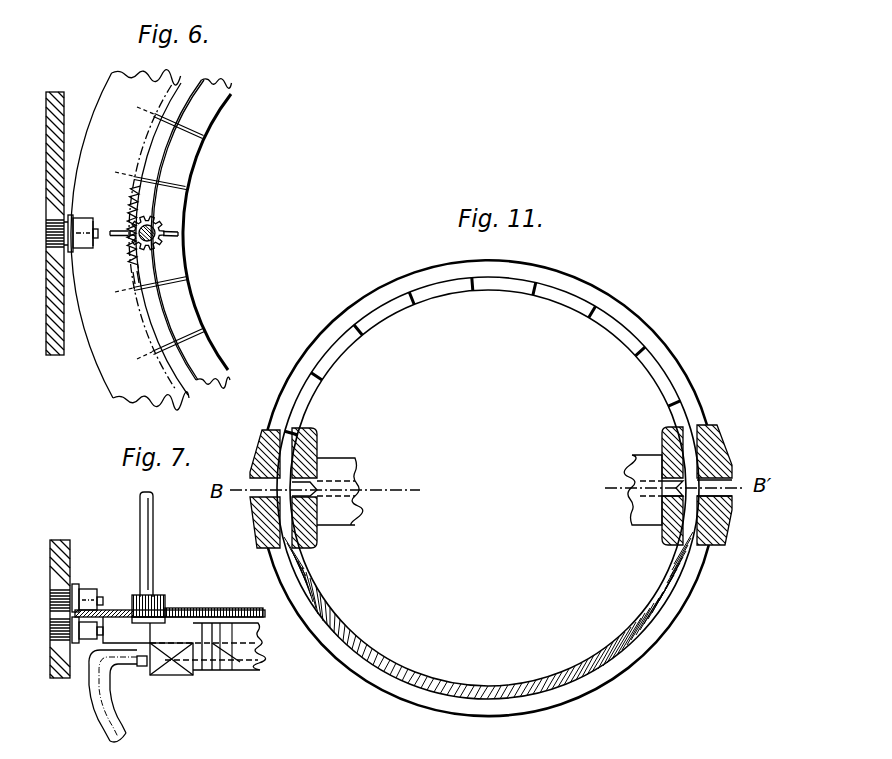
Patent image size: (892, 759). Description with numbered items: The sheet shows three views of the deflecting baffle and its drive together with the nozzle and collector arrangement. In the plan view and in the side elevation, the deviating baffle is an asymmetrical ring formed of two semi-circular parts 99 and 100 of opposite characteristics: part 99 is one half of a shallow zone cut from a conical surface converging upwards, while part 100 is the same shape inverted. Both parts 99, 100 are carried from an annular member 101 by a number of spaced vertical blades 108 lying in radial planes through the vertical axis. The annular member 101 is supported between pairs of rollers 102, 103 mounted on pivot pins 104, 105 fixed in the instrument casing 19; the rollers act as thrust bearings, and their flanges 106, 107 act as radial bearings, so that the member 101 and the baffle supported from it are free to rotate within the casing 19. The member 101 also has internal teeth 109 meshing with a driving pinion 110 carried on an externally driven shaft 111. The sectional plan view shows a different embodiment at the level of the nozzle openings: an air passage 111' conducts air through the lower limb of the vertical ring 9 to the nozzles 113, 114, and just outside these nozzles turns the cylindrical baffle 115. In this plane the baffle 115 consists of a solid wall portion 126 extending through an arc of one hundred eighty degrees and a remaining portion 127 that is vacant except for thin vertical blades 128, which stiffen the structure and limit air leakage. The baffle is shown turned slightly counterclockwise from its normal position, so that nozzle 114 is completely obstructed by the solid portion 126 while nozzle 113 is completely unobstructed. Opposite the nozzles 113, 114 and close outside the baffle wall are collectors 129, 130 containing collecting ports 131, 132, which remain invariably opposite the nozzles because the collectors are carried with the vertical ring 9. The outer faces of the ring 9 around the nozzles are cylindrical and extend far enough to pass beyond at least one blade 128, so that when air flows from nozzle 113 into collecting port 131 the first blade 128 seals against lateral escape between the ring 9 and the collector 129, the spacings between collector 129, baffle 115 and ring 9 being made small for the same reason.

In FIG. 6, the instrument casing 19 is at (55, 330).
In FIG. 6, the semi-circular part 99 is at (203, 337).
In FIG. 7, the semi-circular part 99 is at (175, 668).
In FIG. 6, the semi-circular part 100 is at (180, 166).
In FIG. 7, the semi-circular part 100 is at (213, 660).
In FIG. 6, the annular member 101 is at (140, 323).
In FIG. 7, the annular member 101 is at (113, 610).
In FIG. 6, the roller 102 is at (96, 213).
In FIG. 7, the roller 102 is at (87, 590).
In FIG. 7, the roller 103 is at (85, 642).
In FIG. 6, the pivot pin 104 is at (96, 250).
In FIG. 7, the pivot pin 104 is at (56, 540).
In FIG. 7, the pivot pin 105 is at (78, 629).
In FIG. 6, the flange 106 is at (74, 216).
In FIG. 7, the flange 106 is at (77, 584).
In FIG. 7, the flange 107 is at (58, 678).
In FIG. 6, the vertical blade 108 is at (183, 125).
In FIG. 7, the vertical blade 108 is at (227, 633).
In FIG. 6, the internal teeth 109 is at (128, 215).
In FIG. 7, the internal teeth 109 is at (207, 610).
In FIG. 6, the driving pinion 110 is at (158, 216).
In FIG. 7, the driving pinion 110 is at (153, 597).
In FIG. 6, the shaft 111 is at (181, 239).
In FIG. 7, the shaft 111 is at (168, 538).
In FIG. 11, the air passage 111' is at (402, 515).
In FIG. 11, the nozzle 113 is at (315, 473).
In FIG. 11, the nozzle 114 is at (678, 496).
In FIG. 11, the baffle 115 is at (347, 653).
In FIG. 11, the solid wall portion 126 is at (410, 678).
In FIG. 11, the cut-away portion 127 is at (510, 287).
In FIG. 11, the vertical blade 128 is at (592, 317).
In FIG. 11, the collector 129 is at (263, 523).
In FIG. 11, the collector 130 is at (705, 426).
In FIG. 11, the collecting port 131 is at (263, 495).
In FIG. 11, the collecting port 132 is at (715, 545).
In FIG. 11, the vertical ring 9 is at (315, 443).